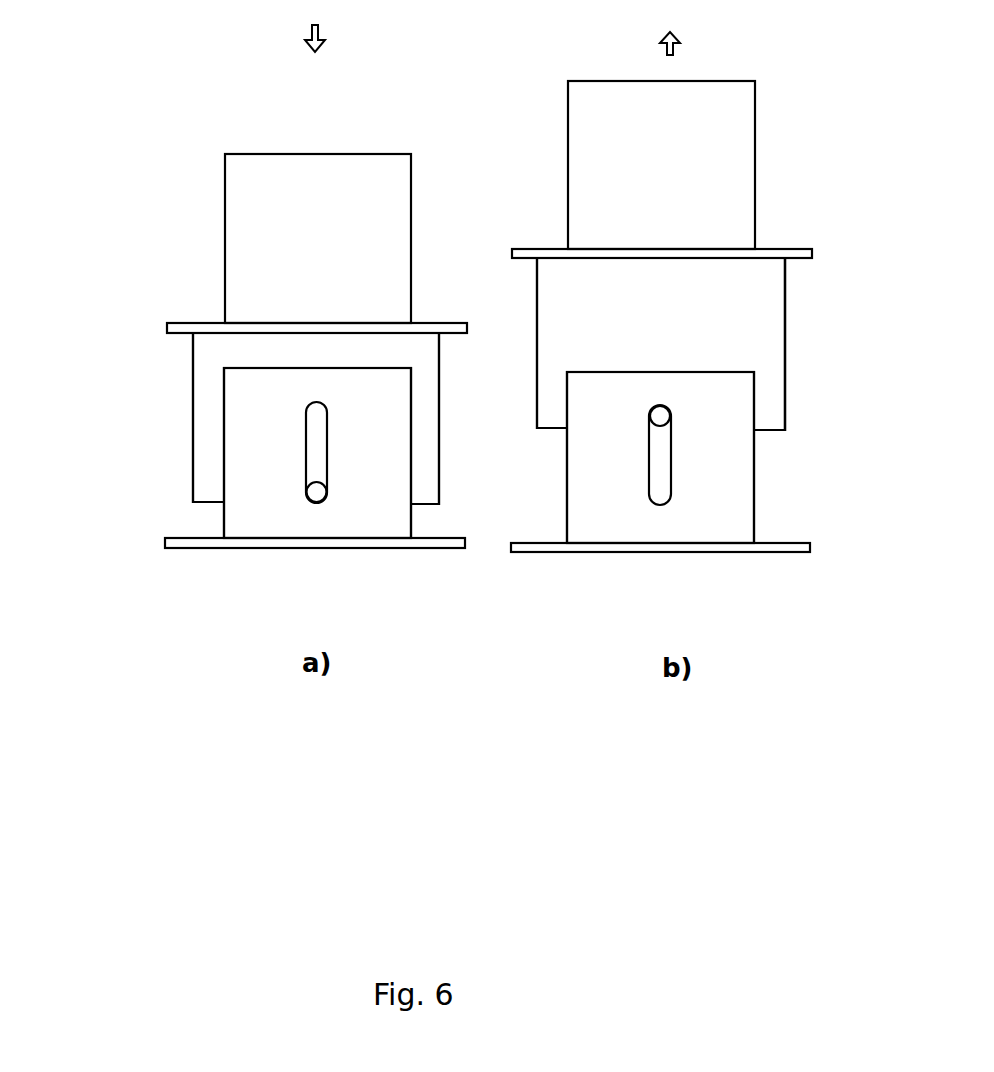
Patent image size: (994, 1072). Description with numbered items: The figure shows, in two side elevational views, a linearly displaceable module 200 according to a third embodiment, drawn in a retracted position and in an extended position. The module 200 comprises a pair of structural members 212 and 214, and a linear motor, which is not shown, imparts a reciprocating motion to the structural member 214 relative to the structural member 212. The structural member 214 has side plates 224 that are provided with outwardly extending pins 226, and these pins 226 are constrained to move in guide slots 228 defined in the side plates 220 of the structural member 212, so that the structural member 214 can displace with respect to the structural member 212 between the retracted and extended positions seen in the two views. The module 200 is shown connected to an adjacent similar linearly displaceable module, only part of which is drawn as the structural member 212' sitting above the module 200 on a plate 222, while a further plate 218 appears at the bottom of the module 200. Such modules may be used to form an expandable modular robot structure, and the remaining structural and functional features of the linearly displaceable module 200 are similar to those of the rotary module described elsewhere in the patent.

In FIG. 6a, the linearly displaceable module 200 is at (172, 418).
In FIG. 6b, the linearly displaceable module 200 is at (798, 402).
In FIG. 6a, the structural member 212 is at (224, 425).
In FIG. 6b, the structural member 212 is at (720, 457).
In FIG. 6a, the structural member of adjacent module 212' is at (257, 232).
In FIG. 6b, the structural member of adjacent module 212' is at (720, 165).
In FIG. 6b, the structural member 214 is at (788, 368).
In FIG. 6a, the base plate 218 is at (232, 547).
In FIG. 6b, the base plate 218 is at (793, 553).
In FIG. 6a, the side plates 220 is at (253, 518).
In FIG. 6b, the side plates 220 is at (728, 520).
In FIG. 6a, the intermediate plate 222 is at (167, 325).
In FIG. 6b, the intermediate plate 222 is at (808, 250).
In FIG. 6a, the side plates 224 is at (205, 398).
In FIG. 6b, the side plates 224 is at (787, 310).
In FIG. 6a, the pins 226 is at (313, 493).
In FIG. 6b, the pins 226 is at (652, 419).
In FIG. 6a, the guide slots 228 is at (318, 443).
In FIG. 6b, the guide slots 228 is at (655, 490).